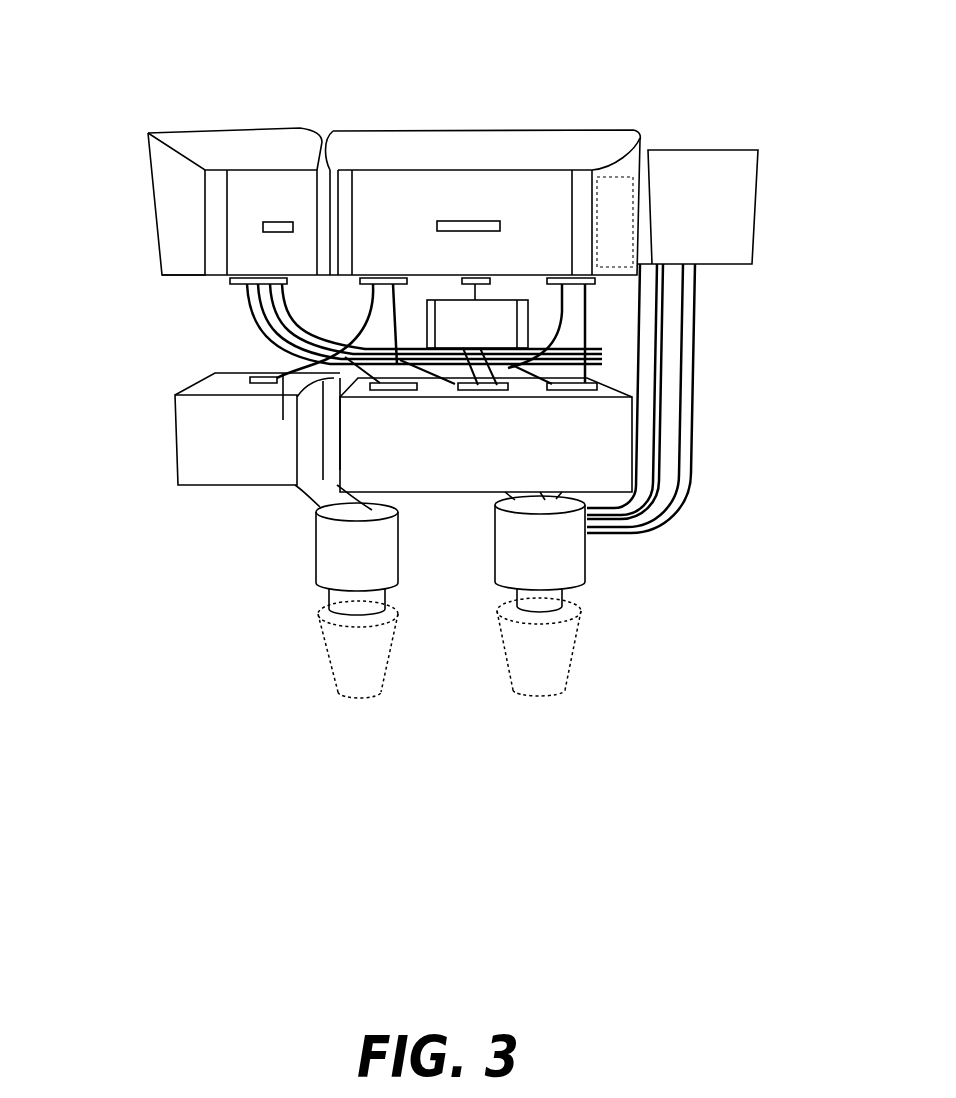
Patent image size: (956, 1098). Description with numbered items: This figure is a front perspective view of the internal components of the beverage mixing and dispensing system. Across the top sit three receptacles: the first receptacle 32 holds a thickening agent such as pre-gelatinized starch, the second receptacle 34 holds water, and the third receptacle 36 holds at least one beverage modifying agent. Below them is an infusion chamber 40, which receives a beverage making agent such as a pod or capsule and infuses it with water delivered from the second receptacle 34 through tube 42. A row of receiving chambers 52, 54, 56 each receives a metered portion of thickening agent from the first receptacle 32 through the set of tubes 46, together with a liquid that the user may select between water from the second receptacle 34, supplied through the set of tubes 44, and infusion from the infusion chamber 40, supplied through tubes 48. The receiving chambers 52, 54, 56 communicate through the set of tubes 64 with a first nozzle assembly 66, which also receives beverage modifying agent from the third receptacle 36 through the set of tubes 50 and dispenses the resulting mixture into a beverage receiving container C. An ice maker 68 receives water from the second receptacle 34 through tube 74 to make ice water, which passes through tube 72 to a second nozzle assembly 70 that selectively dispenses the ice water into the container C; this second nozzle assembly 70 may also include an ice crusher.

The first receptacle 32 is at (163, 170).
The second receptacle 34 is at (457, 148).
The third receptacle 36 is at (733, 213).
The infusion chamber 40 is at (378, 384).
The tube 42 is at (471, 290).
The set of tubes 44 is at (404, 300).
The set of tubes 46 is at (259, 326).
The tubes 48 is at (502, 355).
The set of tubes 50 is at (699, 459).
The receiving chamber 52 is at (393, 385).
The receiving chamber 54 is at (462, 377).
The receiving chamber 56 is at (583, 390).
The set of tubes 64 is at (475, 497).
The first nozzle assembly 66 is at (565, 562).
The ice maker 68 is at (188, 481).
The second nozzle assembly 70 is at (323, 558).
The tube 72 is at (318, 503).
The tube 74 is at (273, 384).
The beverage receiving container C is at (383, 668).